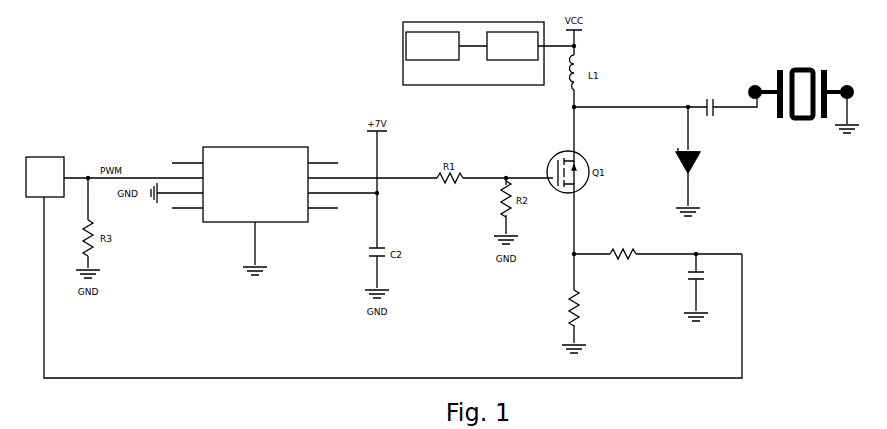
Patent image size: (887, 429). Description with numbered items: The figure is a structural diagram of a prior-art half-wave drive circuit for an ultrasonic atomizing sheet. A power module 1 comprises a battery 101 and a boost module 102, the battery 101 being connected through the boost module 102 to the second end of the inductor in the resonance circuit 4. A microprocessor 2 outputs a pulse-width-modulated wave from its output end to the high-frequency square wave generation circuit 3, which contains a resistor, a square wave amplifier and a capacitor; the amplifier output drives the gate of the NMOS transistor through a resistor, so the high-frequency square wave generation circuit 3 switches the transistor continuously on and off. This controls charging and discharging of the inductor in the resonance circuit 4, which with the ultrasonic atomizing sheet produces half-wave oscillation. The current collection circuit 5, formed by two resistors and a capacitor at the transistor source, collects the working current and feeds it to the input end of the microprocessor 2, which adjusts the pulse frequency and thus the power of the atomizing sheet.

The power module 1 is at (488, 53).
The battery 101 is at (432, 46).
The boost module 102 is at (512, 46).
The microprocessor 2 is at (45, 177).
The high-frequency square wave generation circuit 3 is at (238, 122).
The resonance circuit 4 is at (718, 58).
The current collection circuit 5 is at (543, 313).